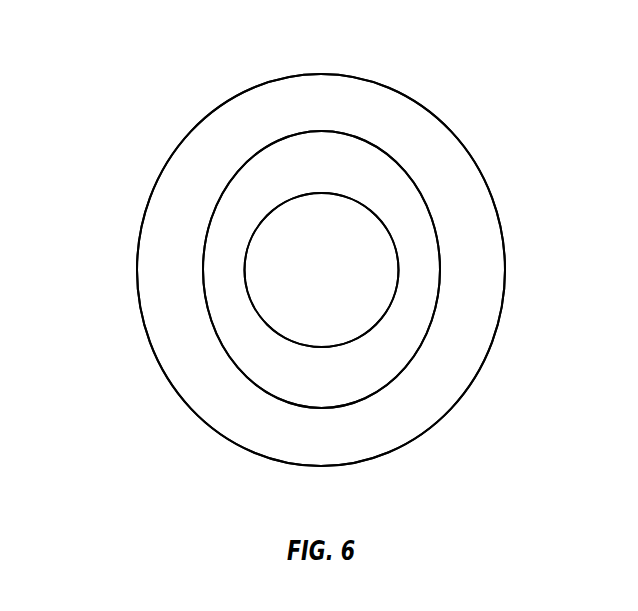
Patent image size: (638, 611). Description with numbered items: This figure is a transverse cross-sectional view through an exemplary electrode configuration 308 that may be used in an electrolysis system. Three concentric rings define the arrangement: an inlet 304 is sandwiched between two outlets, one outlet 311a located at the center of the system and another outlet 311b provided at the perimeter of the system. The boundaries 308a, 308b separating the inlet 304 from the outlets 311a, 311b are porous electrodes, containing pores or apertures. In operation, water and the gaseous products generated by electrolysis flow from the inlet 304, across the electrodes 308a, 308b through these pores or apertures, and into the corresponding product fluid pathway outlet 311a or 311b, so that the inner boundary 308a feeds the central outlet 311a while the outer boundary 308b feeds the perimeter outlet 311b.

The inlet 304 is at (325, 165).
The configuration 308 is at (540, 96).
The boundary 308a is at (398, 256).
The boundary 308b is at (435, 315).
The outlet 311a is at (308, 232).
The outlet 311b is at (173, 240).